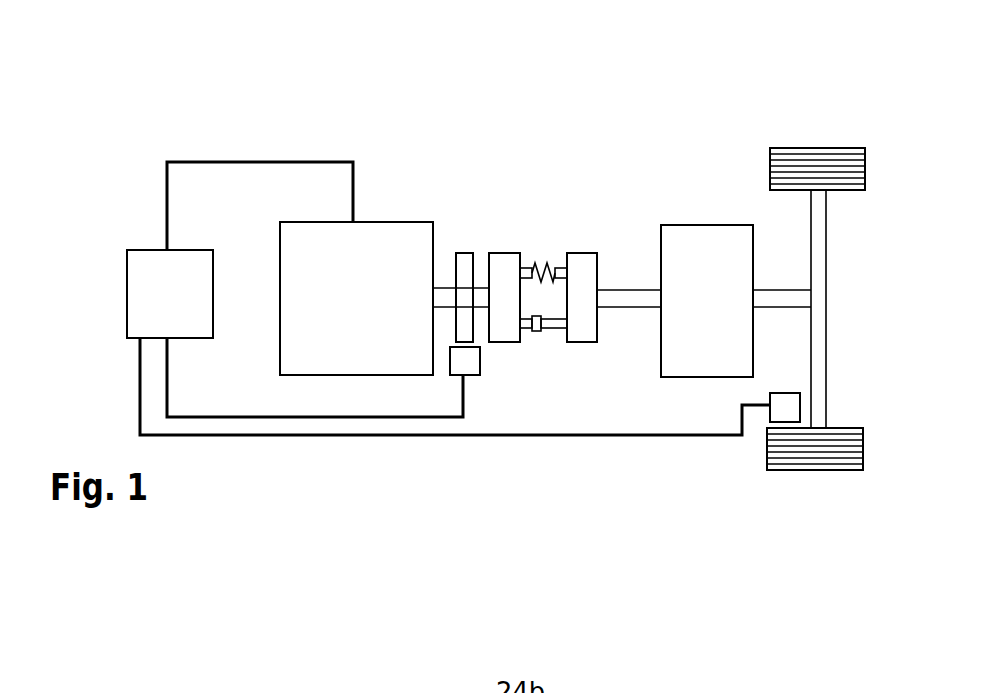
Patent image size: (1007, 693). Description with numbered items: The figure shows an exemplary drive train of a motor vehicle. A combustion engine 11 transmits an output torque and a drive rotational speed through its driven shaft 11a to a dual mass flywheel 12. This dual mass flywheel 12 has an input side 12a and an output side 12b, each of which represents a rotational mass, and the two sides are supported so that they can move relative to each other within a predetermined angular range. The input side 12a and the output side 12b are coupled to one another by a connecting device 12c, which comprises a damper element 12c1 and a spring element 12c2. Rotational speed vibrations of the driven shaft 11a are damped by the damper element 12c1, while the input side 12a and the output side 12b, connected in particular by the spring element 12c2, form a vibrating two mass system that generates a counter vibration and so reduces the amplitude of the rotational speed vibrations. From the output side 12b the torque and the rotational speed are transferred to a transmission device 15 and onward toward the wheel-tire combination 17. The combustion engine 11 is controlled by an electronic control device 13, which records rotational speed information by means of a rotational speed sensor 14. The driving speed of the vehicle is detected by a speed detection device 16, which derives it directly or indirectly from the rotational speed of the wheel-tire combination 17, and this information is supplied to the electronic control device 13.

The combustion engine 11 is at (368, 222).
The driven shaft 11a is at (440, 287).
The dual mass flywheel 12 is at (544, 240).
The input side 12a is at (493, 253).
The output side 12b is at (583, 253).
The connecting device 12c is at (543, 299).
The damper element 12c1 is at (537, 331).
The spring element 12c2 is at (558, 328).
The electronic control device 13 is at (147, 250).
The rotational speed sensor 14 is at (455, 375).
The transmission device 15 is at (695, 225).
The speed detection device 16 is at (398, 393).
The wheel-tire combination 17 is at (852, 428).